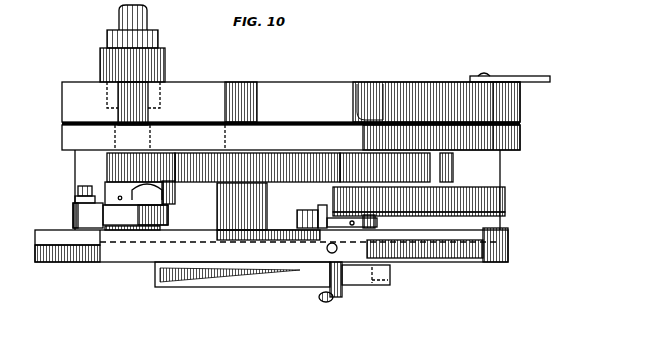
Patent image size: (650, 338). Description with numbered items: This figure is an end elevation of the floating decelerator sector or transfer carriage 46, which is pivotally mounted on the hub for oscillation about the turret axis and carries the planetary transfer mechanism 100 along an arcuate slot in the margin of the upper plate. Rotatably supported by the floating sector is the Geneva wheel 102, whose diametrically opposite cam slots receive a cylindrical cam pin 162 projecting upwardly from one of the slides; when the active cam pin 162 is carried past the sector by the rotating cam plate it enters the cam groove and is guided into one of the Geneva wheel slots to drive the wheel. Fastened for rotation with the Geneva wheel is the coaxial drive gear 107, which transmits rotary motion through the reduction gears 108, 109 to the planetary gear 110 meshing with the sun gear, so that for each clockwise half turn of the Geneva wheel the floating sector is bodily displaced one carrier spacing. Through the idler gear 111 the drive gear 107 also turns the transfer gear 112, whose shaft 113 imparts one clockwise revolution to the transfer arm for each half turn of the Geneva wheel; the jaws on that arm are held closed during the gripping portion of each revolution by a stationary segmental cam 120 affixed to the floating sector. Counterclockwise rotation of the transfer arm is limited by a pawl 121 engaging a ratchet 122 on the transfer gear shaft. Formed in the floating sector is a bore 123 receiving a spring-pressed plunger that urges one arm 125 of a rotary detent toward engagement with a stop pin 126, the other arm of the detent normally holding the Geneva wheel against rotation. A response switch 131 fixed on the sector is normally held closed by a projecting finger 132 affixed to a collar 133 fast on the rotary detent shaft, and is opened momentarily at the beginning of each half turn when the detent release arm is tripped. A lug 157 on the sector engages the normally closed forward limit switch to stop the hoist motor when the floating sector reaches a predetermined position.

The floating decelerator sector 46 is at (318, 92).
The planetary transfer mechanism 100 is at (503, 183).
The Geneva wheel 102 is at (200, 277).
The drive gear 107 is at (282, 163).
The reduction gear 108 is at (420, 172).
The reduction gear 109 is at (395, 204).
The planetary gear 110 is at (506, 198).
The idler gear 111 is at (178, 183).
The transfer gear 112 is at (117, 160).
The shaft 113 is at (128, 15).
The stationary segmental cam 120 is at (118, 40).
The pawl 121 is at (82, 215).
The ratchet 122 is at (167, 217).
The bore 123 is at (326, 248).
The arm of rotary detent 125 is at (392, 271).
The stop pin 126 is at (378, 287).
The response switch 131 is at (313, 222).
The projecting finger 132 is at (323, 214).
The collar 133 is at (378, 221).
The lug 157 is at (540, 77).
The cam pin 162 is at (318, 292).